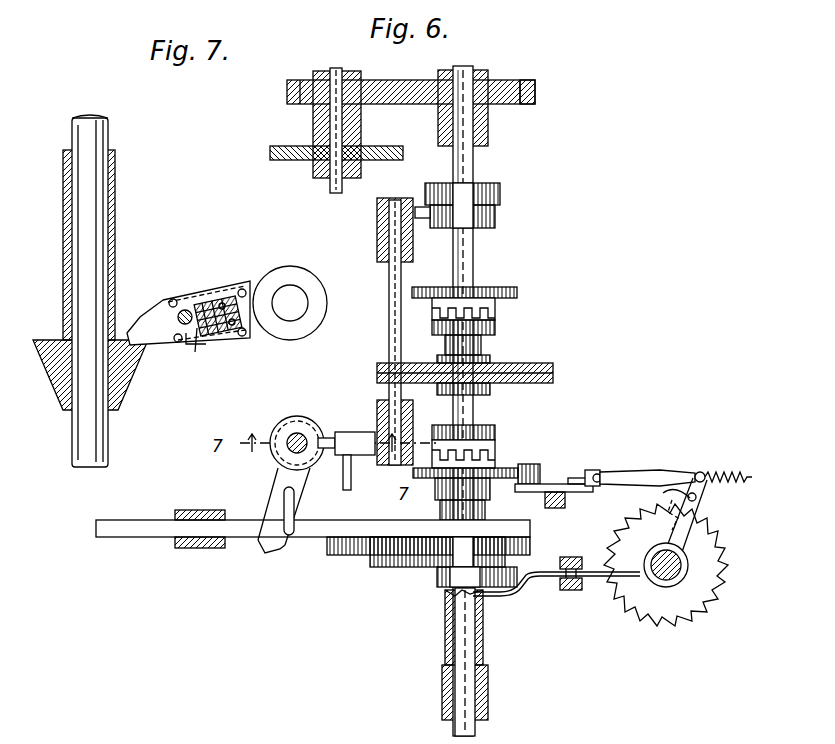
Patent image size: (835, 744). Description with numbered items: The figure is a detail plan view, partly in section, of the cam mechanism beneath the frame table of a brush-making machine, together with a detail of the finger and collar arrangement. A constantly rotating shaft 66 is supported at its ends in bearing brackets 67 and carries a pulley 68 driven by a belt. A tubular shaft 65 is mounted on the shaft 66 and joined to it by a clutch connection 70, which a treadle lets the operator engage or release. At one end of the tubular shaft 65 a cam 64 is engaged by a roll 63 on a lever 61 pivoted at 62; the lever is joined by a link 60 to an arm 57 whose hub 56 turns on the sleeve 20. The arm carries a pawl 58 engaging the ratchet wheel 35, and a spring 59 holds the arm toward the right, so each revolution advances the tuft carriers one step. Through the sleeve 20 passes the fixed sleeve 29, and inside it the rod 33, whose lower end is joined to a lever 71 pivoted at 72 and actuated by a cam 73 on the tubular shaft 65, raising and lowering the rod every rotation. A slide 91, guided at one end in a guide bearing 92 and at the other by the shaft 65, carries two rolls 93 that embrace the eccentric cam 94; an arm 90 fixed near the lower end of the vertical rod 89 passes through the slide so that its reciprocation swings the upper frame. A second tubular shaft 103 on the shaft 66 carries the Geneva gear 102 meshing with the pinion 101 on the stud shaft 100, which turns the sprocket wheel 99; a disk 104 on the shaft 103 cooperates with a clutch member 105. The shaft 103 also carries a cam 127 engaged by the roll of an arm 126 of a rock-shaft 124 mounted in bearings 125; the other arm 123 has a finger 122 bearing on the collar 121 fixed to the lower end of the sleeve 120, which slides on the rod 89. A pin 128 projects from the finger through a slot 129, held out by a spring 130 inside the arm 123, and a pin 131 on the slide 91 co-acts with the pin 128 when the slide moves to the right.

In FIG. 6, the sleeve 20 is at (668, 580).
In FIG. 6, the fixed sleeve 29 is at (660, 572).
In FIG. 6, the rod 33 is at (655, 560).
In FIG. 6, the ratchet wheel 35 is at (708, 602).
In FIG. 6, the hub 56 is at (690, 565).
In FIG. 6, the arm 57 is at (688, 520).
In FIG. 6, the pawl 58 is at (668, 497).
In FIG. 6, the spring 59 is at (732, 471).
In FIG. 6, the link 60 is at (637, 470).
In FIG. 6, the lever 61 is at (567, 500).
In FIG. 6, the pivot 62 is at (566, 482).
In FIG. 6, the roll 63 is at (531, 465).
In FIG. 6, the cam 64 is at (518, 468).
In FIG. 6, the tubular shaft 65 is at (484, 628).
In FIG. 6, the shaft 66 is at (455, 340).
In FIG. 6, the bearing brackets 67 is at (438, 128).
In FIG. 6, the pulley 68 is at (553, 367).
In FIG. 6, the clutch connection 70 is at (495, 436).
In FIG. 6, the lever 71 is at (585, 571).
In FIG. 6, the pivot 72 is at (568, 557).
In FIG. 6, the cam 73 is at (445, 585).
In FIG. 7, the vertical rod 89 is at (100, 440).
In FIG. 6, the vertical rod 89 is at (297, 433).
In FIG. 6, the arm 90 is at (268, 494).
In FIG. 6, the slide 91 is at (124, 538).
In FIG. 6, the guide bearing 92 is at (200, 549).
In FIG. 6, the rolls 93 is at (515, 548).
In FIG. 6, the cam 94 is at (400, 556).
In FIG. 6, the sprocket wheel 99 is at (278, 161).
In FIG. 6, the stud shaft 100 is at (334, 190).
In FIG. 6, the pinion 101 is at (293, 82).
In FIG. 6, the gear 102 is at (533, 82).
In FIG. 6, the tubular shaft 103 is at (484, 157).
In FIG. 6, the disk 104 is at (512, 288).
In FIG. 6, the clutch member 105 is at (495, 318).
In FIG. 7, the sleeve 120 is at (117, 233).
In FIG. 6, the sleeve 120 is at (303, 438).
In FIG. 7, the collar 121 is at (130, 370).
In FIG. 6, the collar 121 is at (285, 430).
In FIG. 7, the finger 122 is at (140, 317).
In FIG. 6, the finger 122 is at (342, 432).
In FIG. 7, the arm 123 is at (218, 290).
In FIG. 6, the arm 123 is at (375, 442).
In FIG. 7, the rock-shaft 124 is at (292, 303).
In FIG. 6, the rock-shaft 124 is at (389, 326).
In FIG. 6, the bearings 125 is at (377, 247).
In FIG. 6, the arm 126 is at (428, 212).
In FIG. 6, the cam 127 is at (500, 194).
In FIG. 7, the pin 128 is at (183, 312).
In FIG. 6, the pin 128 is at (318, 500).
In FIG. 7, the slot 129 is at (196, 344).
In FIG. 7, the spring 130 is at (222, 305).
In FIG. 6, the pin 131 is at (272, 553).